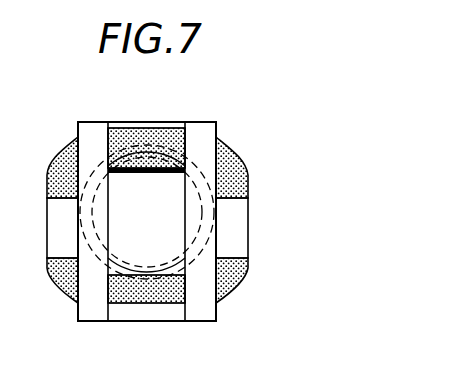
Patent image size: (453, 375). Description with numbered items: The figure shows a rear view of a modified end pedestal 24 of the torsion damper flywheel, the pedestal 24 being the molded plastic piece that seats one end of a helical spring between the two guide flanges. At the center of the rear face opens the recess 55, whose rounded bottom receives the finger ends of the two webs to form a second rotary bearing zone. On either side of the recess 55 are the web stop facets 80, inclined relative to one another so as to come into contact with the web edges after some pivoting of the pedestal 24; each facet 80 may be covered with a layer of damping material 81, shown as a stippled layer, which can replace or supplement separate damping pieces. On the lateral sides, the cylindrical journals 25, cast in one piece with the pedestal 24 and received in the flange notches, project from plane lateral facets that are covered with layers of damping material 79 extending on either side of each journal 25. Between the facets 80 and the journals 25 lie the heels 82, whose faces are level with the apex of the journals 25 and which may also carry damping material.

The end pedestal 24 is at (216, 112).
The lateral journal 25 is at (57, 230).
The recess 55 is at (156, 227).
The layer of damping material 79 is at (63, 173).
The web stop facet 80 is at (135, 124).
The layer of damping material 81 is at (165, 128).
The heel 82 is at (90, 295).